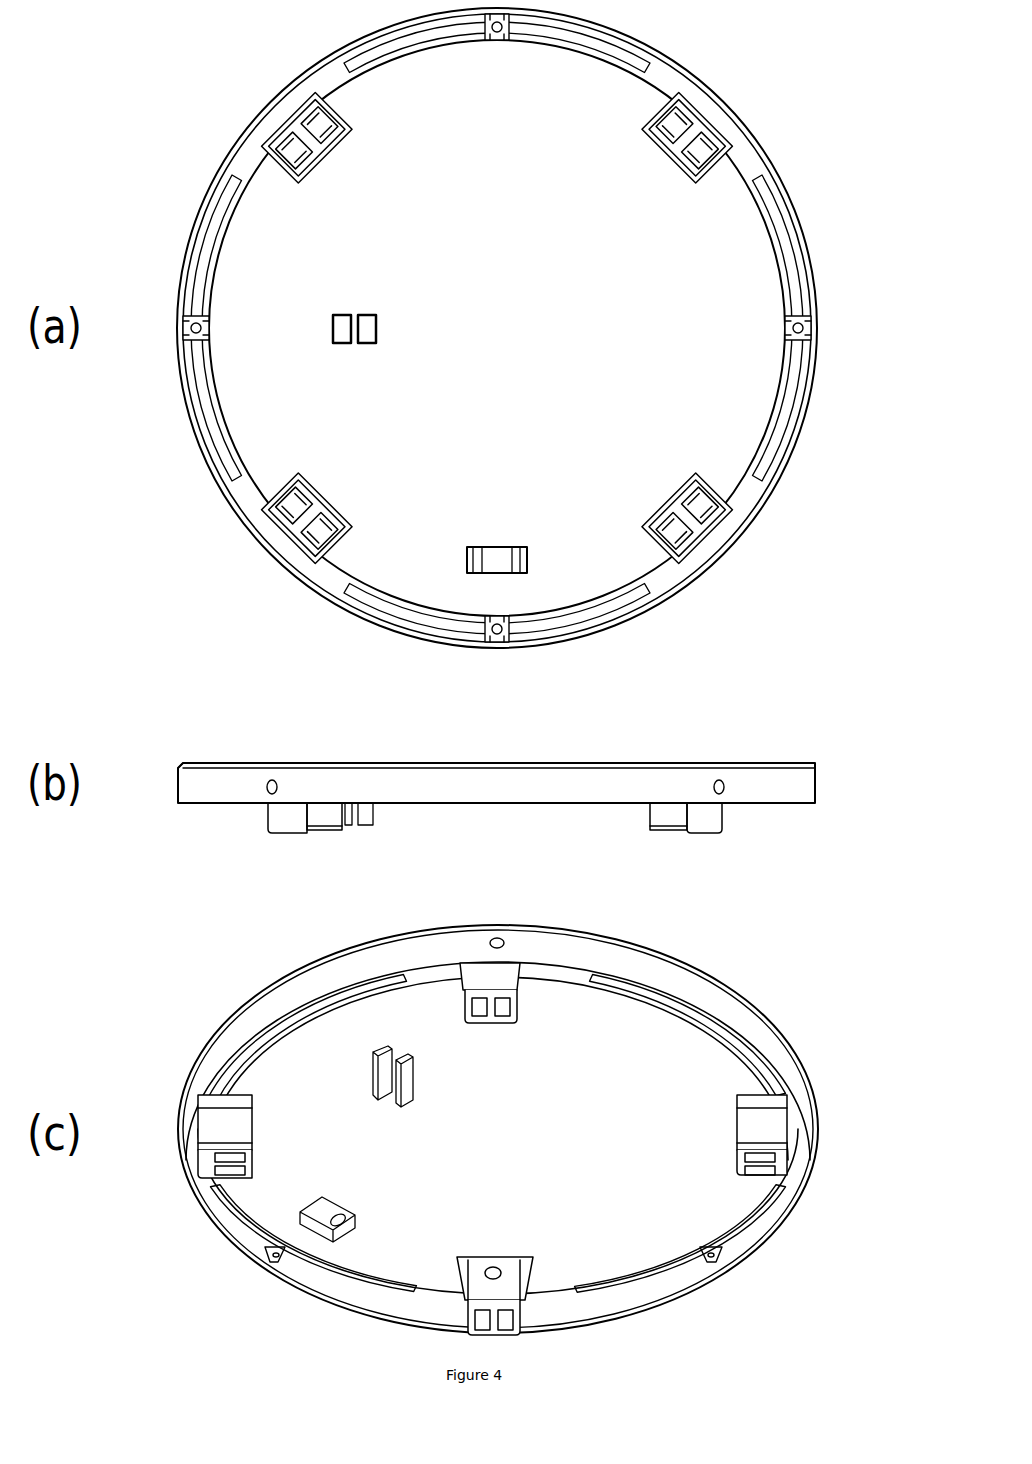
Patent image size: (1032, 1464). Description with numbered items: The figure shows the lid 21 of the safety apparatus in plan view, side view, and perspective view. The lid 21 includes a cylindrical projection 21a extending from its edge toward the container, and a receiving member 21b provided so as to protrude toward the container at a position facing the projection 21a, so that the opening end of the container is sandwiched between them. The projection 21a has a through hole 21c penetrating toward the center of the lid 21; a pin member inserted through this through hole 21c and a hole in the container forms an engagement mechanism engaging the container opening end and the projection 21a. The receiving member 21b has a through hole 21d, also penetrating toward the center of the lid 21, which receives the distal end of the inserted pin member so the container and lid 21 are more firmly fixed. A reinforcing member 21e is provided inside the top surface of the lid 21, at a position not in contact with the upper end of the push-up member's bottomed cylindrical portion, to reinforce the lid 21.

The lid 21 is at (252, 122).
The cylindrical projection 21a is at (778, 182).
The receiving member 21b is at (320, 152).
The through hole 21c is at (272, 783).
The through hole 21d is at (490, 1266).
The reinforcing member 21e is at (573, 52).